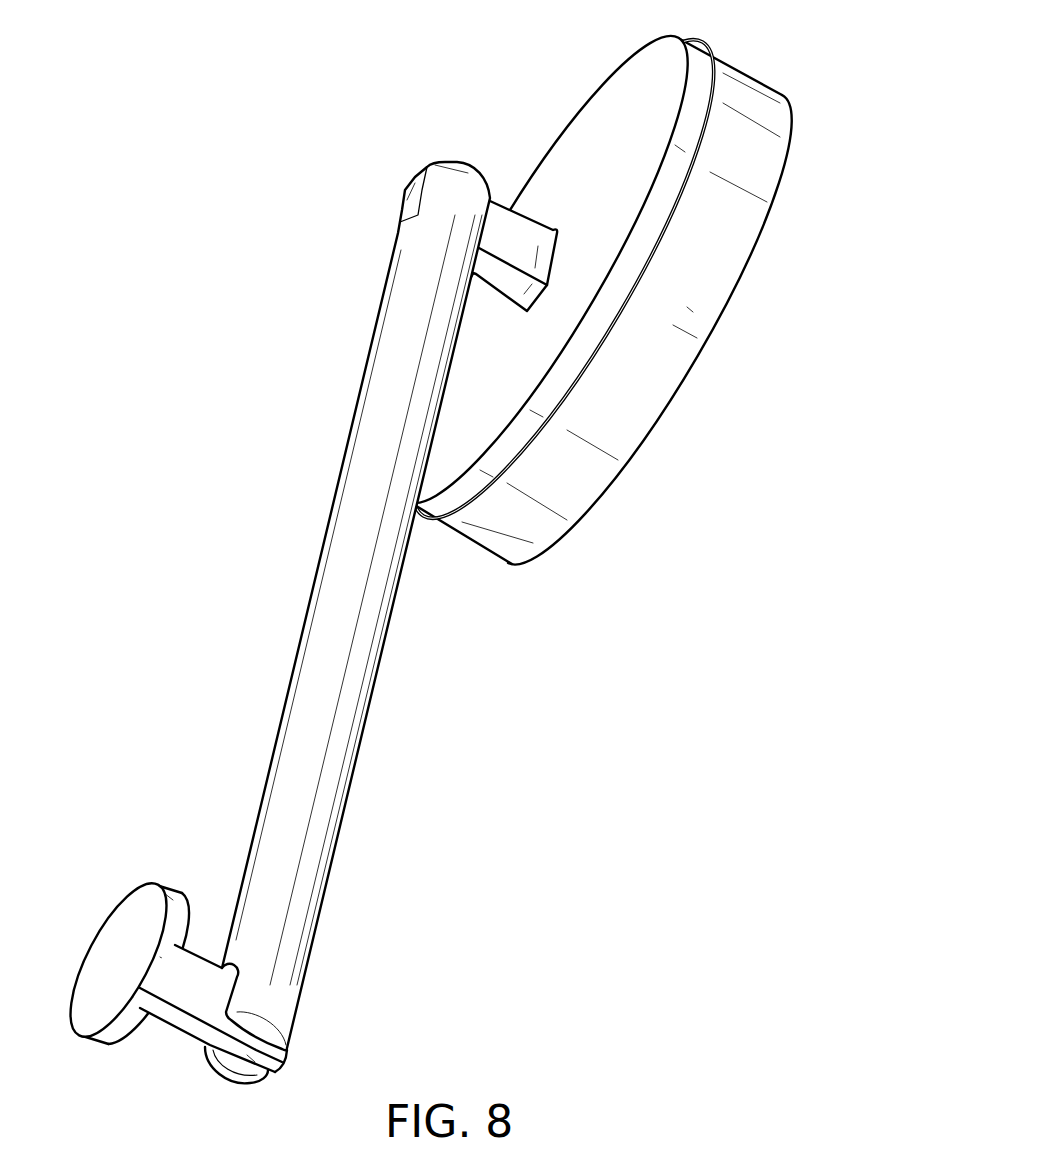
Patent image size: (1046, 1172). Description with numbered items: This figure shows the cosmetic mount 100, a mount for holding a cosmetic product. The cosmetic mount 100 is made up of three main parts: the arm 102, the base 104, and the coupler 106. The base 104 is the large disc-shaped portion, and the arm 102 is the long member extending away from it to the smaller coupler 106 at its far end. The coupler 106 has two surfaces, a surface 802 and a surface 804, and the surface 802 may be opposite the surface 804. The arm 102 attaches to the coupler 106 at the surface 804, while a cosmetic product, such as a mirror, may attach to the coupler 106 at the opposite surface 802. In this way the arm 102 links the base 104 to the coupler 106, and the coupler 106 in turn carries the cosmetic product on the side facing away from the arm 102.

The cosmetic mount 100 is at (411, 545).
The arm 102 is at (367, 468).
The base 104 is at (598, 112).
The coupler 106 is at (117, 1017).
The surface 802 is at (120, 931).
The surface 804 is at (186, 895).